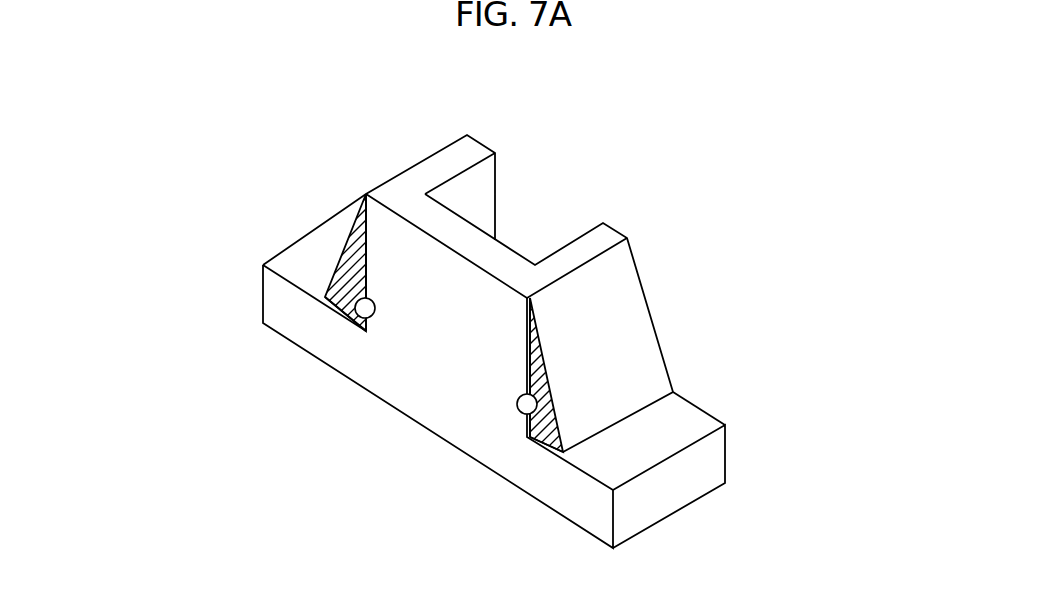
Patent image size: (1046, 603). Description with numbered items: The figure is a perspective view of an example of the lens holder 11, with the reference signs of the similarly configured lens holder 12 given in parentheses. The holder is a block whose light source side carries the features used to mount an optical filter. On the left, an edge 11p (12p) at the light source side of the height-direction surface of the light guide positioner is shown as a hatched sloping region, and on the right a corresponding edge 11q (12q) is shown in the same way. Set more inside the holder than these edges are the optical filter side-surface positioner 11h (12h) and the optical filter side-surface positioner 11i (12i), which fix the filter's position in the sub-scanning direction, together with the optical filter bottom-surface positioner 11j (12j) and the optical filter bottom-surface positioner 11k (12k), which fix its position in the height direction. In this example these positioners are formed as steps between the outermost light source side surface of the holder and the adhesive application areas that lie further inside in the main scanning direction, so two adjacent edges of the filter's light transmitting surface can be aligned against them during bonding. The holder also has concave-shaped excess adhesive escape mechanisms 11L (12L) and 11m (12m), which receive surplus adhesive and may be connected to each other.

The lens holder 11 is at (494, 315).
The lens holder 12 is at (417, 176).
The edge 11p is at (276, 254).
The edge 12p is at (345, 250).
The optical filter side-surface positioner 11h is at (212, 286).
The optical filter side-surface positioner 12h is at (347, 265).
The optical filter bottom-surface positioner 11j is at (259, 357).
The optical filter bottom-surface positioner 12j is at (356, 309).
The excess adhesive escape mechanism 11L is at (258, 396).
The excess adhesive escape mechanism 12L is at (371, 316).
The optical filter side-surface positioner 11i is at (439, 404).
The optical filter side-surface positioner 12i is at (525, 356).
The optical filter bottom-surface positioner 11k is at (496, 490).
The optical filter bottom-surface positioner 12k is at (541, 433).
The edge 11q is at (695, 370).
The edge 12q is at (541, 367).
The excess adhesive escape mechanism 11m is at (723, 495).
The excess adhesive escape mechanism 12m is at (539, 404).